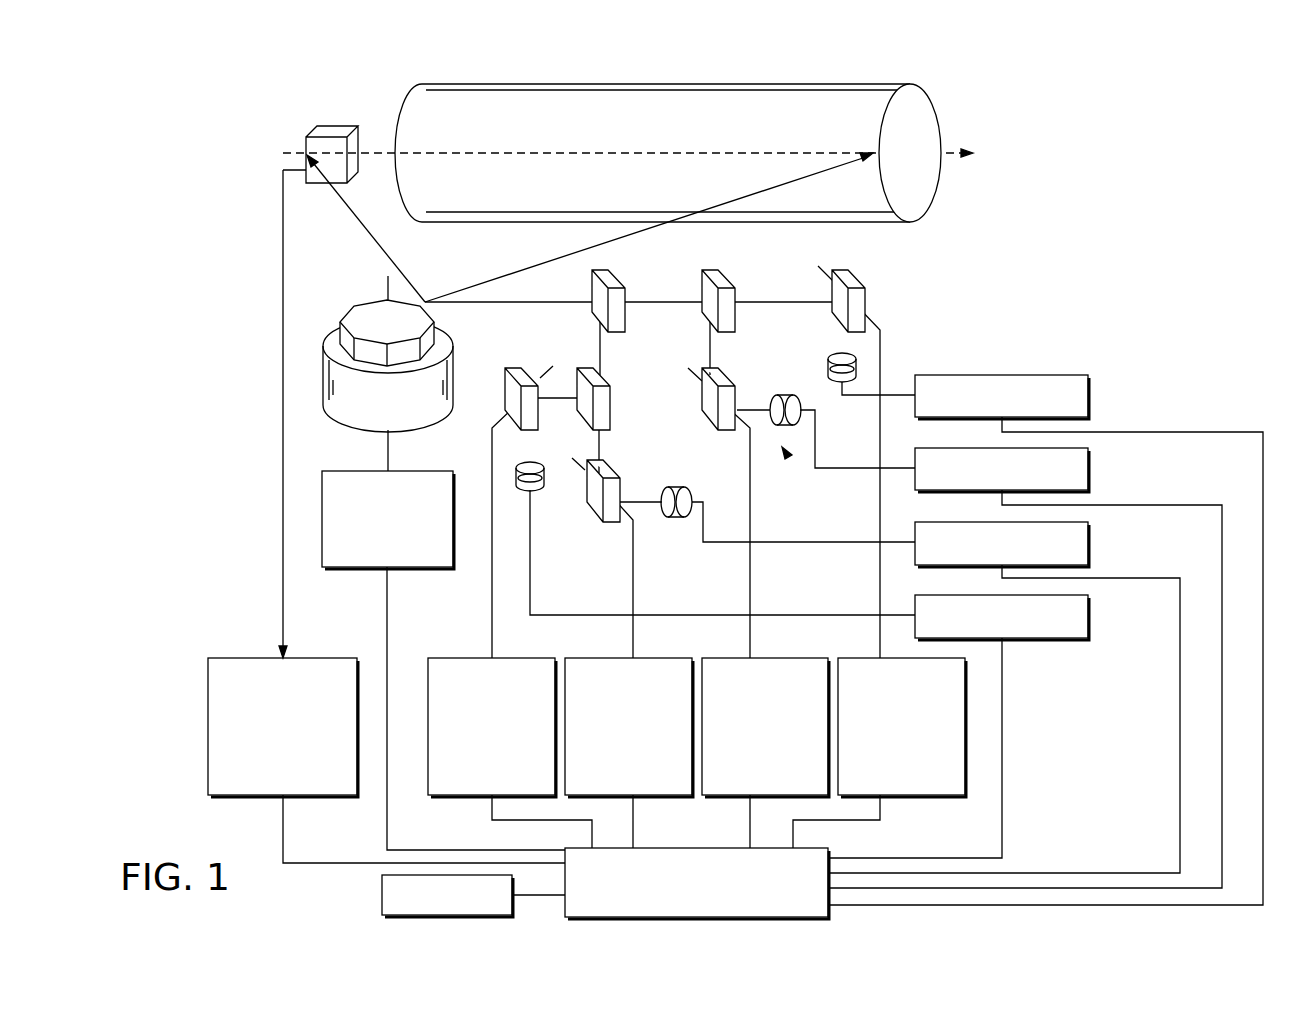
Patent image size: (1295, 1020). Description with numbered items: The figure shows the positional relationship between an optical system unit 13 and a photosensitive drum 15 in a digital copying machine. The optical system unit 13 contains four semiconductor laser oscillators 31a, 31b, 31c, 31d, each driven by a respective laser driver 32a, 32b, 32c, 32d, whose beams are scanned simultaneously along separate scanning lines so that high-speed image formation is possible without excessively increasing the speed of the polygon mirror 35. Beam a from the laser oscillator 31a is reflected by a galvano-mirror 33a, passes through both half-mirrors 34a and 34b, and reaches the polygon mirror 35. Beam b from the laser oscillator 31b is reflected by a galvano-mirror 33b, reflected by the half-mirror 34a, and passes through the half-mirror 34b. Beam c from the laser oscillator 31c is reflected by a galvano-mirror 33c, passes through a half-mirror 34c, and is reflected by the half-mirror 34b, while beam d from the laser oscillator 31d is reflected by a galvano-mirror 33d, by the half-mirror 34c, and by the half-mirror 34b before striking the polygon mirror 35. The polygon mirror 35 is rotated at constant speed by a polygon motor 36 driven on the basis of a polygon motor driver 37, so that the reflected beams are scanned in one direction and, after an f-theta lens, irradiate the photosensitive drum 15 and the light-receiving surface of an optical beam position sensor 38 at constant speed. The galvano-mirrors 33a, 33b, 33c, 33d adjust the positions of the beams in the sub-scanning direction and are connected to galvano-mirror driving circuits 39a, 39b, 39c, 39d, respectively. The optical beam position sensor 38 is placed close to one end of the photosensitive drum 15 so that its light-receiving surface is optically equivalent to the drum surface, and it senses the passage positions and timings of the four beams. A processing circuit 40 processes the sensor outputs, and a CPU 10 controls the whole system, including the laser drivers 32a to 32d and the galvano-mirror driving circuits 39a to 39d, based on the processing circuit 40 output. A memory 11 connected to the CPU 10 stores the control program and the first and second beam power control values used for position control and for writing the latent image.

The CPU 10 is at (672, 848).
The memory 11 is at (382, 895).
The optical system unit 13 is at (788, 454).
The photosensitive drum 15 is at (935, 100).
The laser oscillator 31a is at (830, 354).
The laser oscillator 31b is at (787, 395).
The laser oscillator 31c is at (678, 518).
The laser oscillator 31d is at (540, 475).
The laser driver 32a is at (1090, 398).
The laser driver 32b is at (1090, 471).
The laser driver 32c is at (1090, 545).
The laser driver 32d is at (1090, 618).
The galvano-mirror 33a is at (858, 272).
The galvano-mirror 33b is at (700, 402).
The galvano-mirror 33c is at (596, 522).
The galvano-mirror 33d is at (505, 402).
The half-mirror 34a is at (728, 272).
The half-mirror 34b is at (618, 272).
The half-mirror 34c is at (630, 418).
The polygon mirror 35 is at (366, 305).
The polygon motor 36 is at (448, 322).
The polygon motor driver 37 is at (424, 569).
The optical beam position sensor 38 is at (340, 125).
The galvano-mirror driving circuit 39a is at (860, 658).
The galvano-mirror driving circuit 39b is at (792, 658).
The galvano-mirror driving circuit 39c is at (676, 658).
The galvano-mirror driving circuit 39d is at (532, 658).
The processing circuit 40 is at (332, 658).